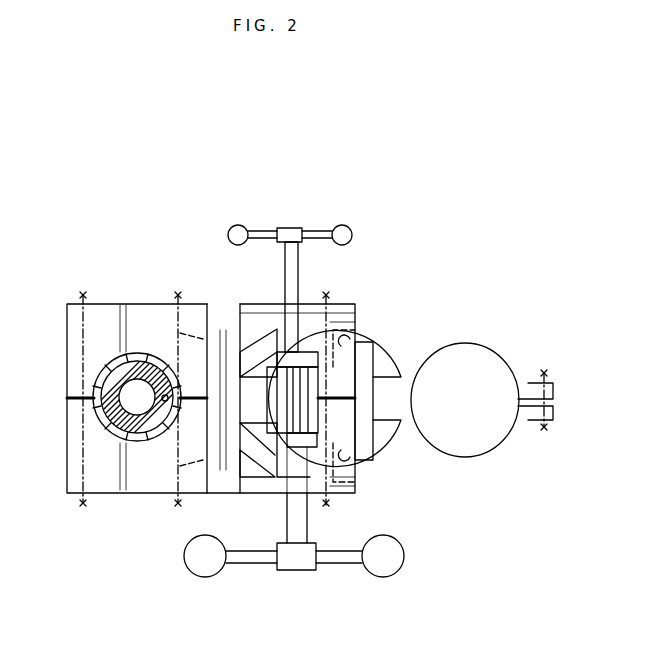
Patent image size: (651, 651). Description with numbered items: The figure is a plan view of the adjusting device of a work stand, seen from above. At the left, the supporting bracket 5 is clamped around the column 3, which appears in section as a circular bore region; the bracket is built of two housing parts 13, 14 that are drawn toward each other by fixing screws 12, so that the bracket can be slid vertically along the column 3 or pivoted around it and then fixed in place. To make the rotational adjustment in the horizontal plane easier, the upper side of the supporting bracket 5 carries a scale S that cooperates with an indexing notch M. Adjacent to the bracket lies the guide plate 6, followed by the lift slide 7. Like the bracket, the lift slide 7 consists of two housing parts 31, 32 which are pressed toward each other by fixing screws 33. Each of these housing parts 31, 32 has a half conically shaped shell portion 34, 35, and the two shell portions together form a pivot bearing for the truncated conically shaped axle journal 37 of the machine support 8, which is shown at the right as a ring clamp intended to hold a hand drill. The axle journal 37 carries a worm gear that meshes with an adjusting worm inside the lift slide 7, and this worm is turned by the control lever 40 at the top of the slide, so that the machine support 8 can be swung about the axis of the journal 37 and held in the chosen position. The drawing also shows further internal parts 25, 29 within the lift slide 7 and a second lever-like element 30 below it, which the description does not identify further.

The column 3 is at (117, 389).
The supporting bracket 5 is at (126, 498).
The guide plate 6 is at (213, 330).
The lift slide 7 is at (345, 299).
The machine support 8 is at (480, 343).
The fixing screws 12 is at (83, 293).
The housing part 13 is at (72, 357).
The housing part 14 is at (75, 459).
The wedge members 25 is at (260, 305).
The threaded clamp body 29 is at (307, 306).
The lower handle 30 is at (258, 566).
The housing part 31 is at (356, 304).
The housing part 32 is at (355, 493).
The fixing screws 33 is at (328, 505).
The half conically shaped shell portion 34 is at (360, 341).
The half conically shaped shell portion 35 is at (367, 462).
The axle journal 37 is at (346, 399).
The control lever 40 is at (288, 227).
The indexing notch M is at (157, 360).
The scale S is at (147, 440).